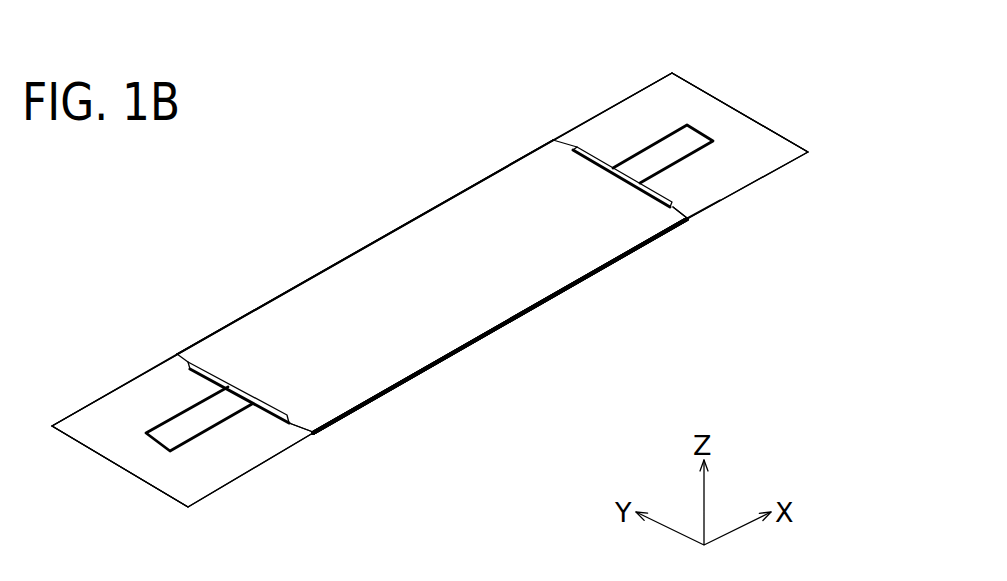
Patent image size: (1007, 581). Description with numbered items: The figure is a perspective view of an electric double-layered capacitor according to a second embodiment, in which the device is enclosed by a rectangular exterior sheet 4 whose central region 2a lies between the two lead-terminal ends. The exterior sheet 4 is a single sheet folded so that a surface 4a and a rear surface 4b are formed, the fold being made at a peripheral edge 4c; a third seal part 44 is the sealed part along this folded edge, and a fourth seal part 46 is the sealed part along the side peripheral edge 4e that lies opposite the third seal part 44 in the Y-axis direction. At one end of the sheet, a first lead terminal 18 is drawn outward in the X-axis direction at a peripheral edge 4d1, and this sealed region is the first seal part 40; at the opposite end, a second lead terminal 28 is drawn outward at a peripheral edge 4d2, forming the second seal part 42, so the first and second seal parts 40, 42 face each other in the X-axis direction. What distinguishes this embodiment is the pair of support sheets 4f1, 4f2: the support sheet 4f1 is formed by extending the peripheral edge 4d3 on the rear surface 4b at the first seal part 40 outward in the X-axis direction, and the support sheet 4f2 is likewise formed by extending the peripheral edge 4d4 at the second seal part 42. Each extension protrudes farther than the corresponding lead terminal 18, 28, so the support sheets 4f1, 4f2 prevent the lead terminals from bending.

The exterior sheet 4 is at (557, 250).
The vibrating portion 2a is at (420, 252).
The surface 4a is at (367, 355).
The rear surface 4b is at (483, 336).
The peripheral edge 4c is at (293, 288).
The side peripheral edge 4e is at (518, 316).
The third seal part 44 is at (482, 180).
The fourth seal part 46 is at (363, 405).
The peripheral edge 4d1 is at (300, 428).
The peripheral edge 4d2 is at (688, 210).
The peripheral edge 4d3 is at (118, 470).
The peripheral edge 4d4 is at (790, 135).
The support sheet 4f1 is at (93, 420).
The support sheet 4f2 is at (728, 130).
The first seal part 40 is at (262, 410).
The second seal part 42 is at (601, 158).
The first lead terminal 18 is at (188, 418).
The second lead terminal 28 is at (667, 140).